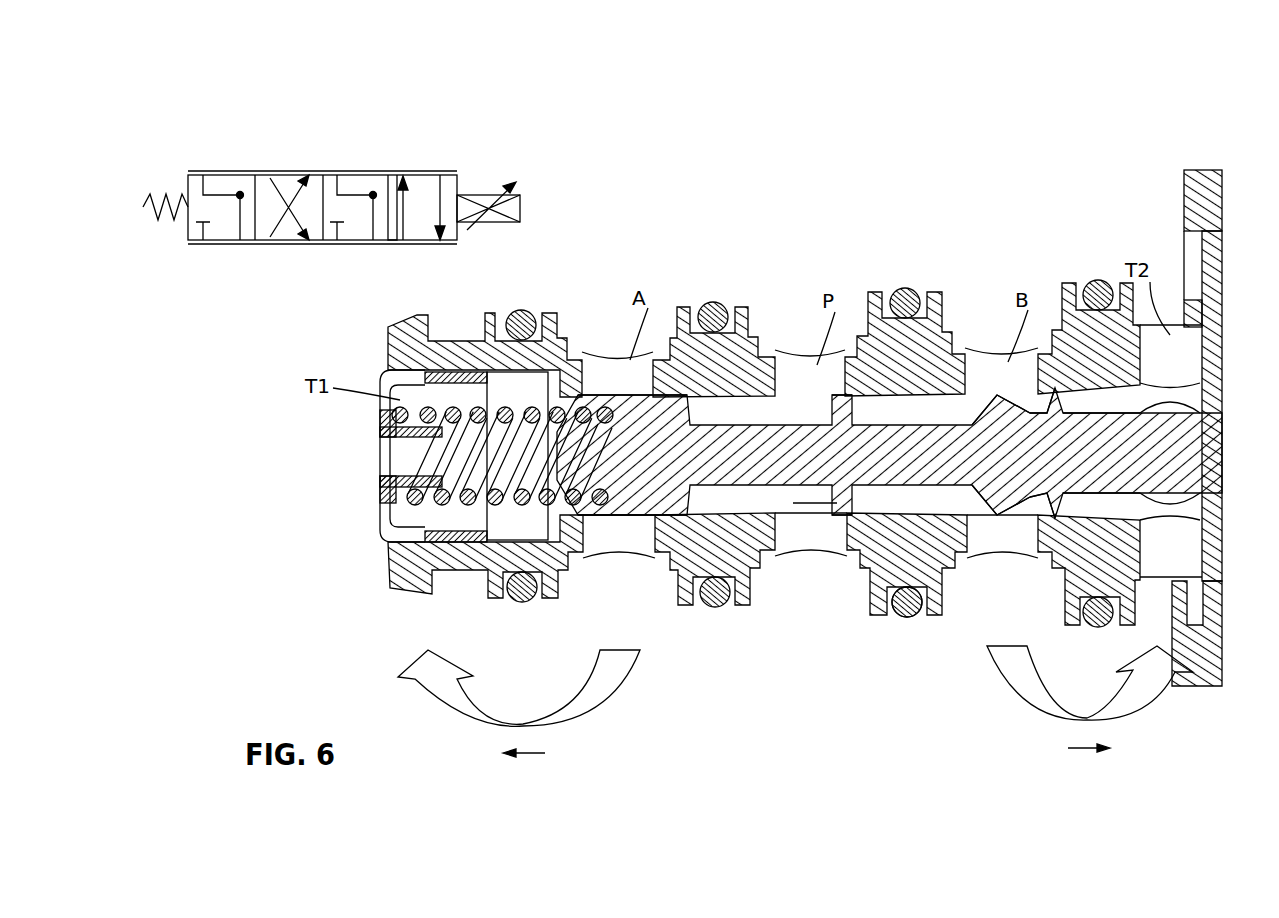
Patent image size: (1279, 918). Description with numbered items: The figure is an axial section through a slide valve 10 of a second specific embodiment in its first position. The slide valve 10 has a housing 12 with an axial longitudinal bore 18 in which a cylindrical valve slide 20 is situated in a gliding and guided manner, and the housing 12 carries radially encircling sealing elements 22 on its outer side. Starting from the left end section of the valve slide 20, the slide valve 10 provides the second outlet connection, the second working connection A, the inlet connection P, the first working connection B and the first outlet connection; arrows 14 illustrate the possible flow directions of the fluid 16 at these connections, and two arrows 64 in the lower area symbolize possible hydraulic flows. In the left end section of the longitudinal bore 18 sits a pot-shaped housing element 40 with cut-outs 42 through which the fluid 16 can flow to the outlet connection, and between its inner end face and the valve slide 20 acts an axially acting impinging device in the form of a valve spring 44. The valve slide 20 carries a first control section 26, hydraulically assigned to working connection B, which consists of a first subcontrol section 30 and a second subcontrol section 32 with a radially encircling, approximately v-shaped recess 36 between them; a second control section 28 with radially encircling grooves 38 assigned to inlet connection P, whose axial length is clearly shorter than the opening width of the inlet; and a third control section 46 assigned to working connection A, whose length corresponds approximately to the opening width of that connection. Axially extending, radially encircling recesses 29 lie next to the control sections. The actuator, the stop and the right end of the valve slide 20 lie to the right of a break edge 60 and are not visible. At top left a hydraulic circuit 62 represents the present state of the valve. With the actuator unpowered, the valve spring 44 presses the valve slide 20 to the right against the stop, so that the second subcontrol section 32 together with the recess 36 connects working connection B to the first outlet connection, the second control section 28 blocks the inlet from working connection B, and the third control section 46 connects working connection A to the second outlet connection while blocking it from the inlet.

The slide valve 10 is at (283, 342).
The housing 12 is at (415, 575).
The arrows 14 is at (618, 320).
The fluid 16 is at (907, 617).
The axial longitudinal bore 18 is at (753, 500).
The valve slide 20 is at (720, 475).
The sealing elements 22 is at (521, 310).
The first control section 26 is at (1033, 453).
The second control section 28 is at (844, 455).
The recesses 29 is at (838, 527).
The first subcontrol section 30 is at (999, 455).
The second subcontrol section 32 is at (1097, 453).
The recess 36 is at (1022, 525).
The grooves 38 is at (640, 455).
The housing element 40 is at (415, 480).
The cut-outs 42 is at (384, 388).
The valve spring 44 is at (462, 505).
The third control section 46 is at (670, 485).
The break edge 60 is at (1212, 232).
The hydraulic circuit 62 is at (330, 172).
The arrows 64 is at (795, 707).